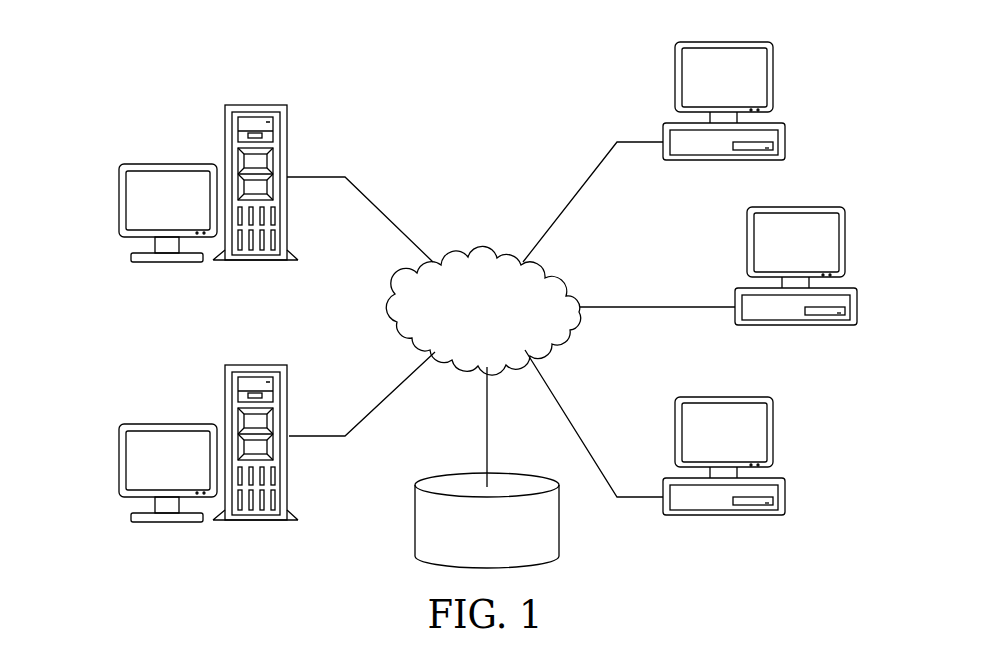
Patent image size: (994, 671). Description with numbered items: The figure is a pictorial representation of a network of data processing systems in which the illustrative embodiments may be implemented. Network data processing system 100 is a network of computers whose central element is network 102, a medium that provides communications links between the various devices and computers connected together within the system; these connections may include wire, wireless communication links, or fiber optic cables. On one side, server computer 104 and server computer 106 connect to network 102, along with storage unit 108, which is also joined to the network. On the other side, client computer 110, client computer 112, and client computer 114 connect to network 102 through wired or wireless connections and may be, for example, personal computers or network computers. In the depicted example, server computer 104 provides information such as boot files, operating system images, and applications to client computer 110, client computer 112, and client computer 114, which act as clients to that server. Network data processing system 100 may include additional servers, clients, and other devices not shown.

The network data processing system 100 is at (350, 86).
The network 102 is at (460, 255).
The server computer 104 is at (120, 200).
The server computer 106 is at (118, 460).
The storage unit 108 is at (413, 520).
The client computer 110 is at (785, 132).
The client computer 112 is at (856, 318).
The client computer 114 is at (784, 507).